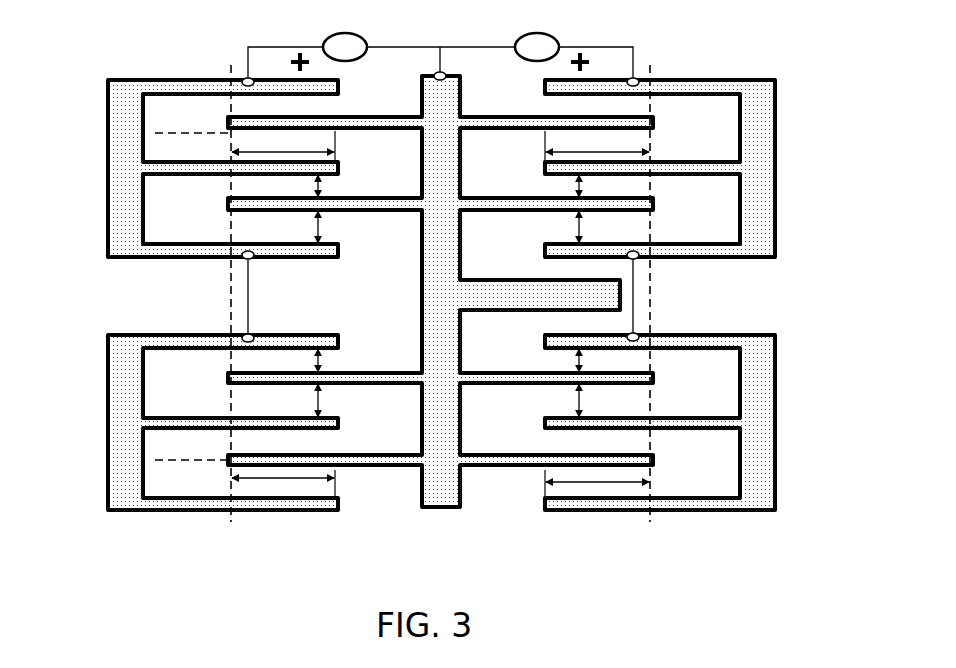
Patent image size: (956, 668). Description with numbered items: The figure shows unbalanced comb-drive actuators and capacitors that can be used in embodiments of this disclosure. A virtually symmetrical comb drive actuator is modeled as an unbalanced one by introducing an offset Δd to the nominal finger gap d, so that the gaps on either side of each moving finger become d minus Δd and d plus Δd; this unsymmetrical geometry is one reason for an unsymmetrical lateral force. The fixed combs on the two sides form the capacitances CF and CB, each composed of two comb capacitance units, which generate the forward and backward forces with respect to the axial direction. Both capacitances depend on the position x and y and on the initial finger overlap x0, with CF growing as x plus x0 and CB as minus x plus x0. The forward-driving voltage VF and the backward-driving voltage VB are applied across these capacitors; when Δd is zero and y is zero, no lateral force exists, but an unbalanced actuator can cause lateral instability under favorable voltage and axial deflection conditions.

The backward force capacitance CB is at (198, 218).
The forward force capacitance CF is at (685, 390).
The backward-driving voltage VB is at (344, 176).
The forward-driving voltage VF is at (539, 176).
The initial finger overlap x0 is at (440, 315).
The nominal finger gap d is at (478, 296).